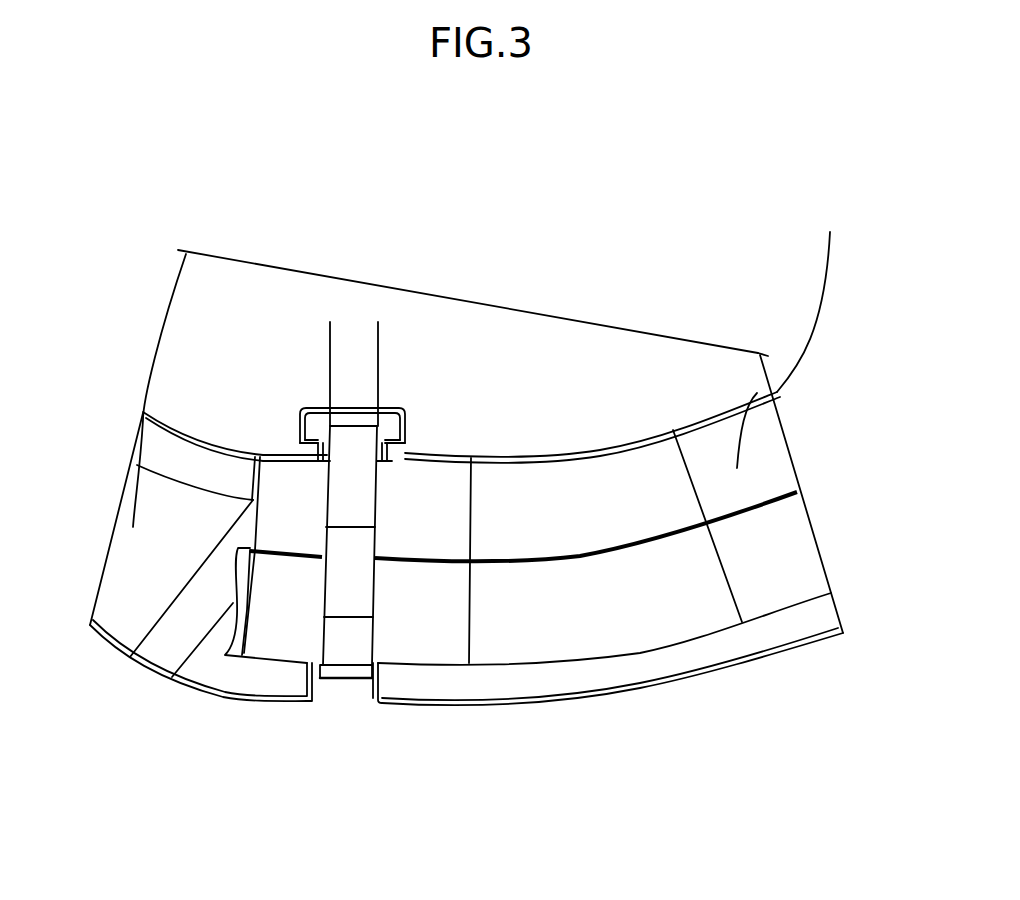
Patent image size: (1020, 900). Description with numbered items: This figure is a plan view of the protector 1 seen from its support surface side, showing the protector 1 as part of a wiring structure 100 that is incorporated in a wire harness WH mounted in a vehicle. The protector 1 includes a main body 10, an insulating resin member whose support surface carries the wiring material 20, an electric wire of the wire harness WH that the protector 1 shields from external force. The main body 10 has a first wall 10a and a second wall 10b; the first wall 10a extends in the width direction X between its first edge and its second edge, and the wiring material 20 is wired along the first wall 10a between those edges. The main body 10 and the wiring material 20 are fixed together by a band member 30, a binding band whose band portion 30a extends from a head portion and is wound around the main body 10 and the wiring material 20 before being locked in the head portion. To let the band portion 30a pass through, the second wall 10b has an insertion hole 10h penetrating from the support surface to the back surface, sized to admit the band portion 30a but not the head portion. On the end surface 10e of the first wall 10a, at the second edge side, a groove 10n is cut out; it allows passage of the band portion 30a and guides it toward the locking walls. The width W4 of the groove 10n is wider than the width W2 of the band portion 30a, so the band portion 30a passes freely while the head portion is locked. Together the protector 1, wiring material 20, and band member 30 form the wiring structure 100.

The main body 10 is at (192, 188).
The first wall 10a is at (142, 432).
The second wall 10b is at (188, 437).
The end surface 10e is at (596, 700).
The insertion hole 10h is at (317, 405).
The groove 10n is at (375, 690).
The wiring material 20 is at (775, 562).
The band member 30 is at (397, 430).
The band portion 30a is at (355, 495).
The wiring structure 100 is at (848, 182).
The protector 1 is at (689, 212).
The wire harness WH is at (594, 212).
The width of the band portion W2 is at (378, 336).
The width of the groove W4 is at (312, 708).
The width direction X is at (441, 461).